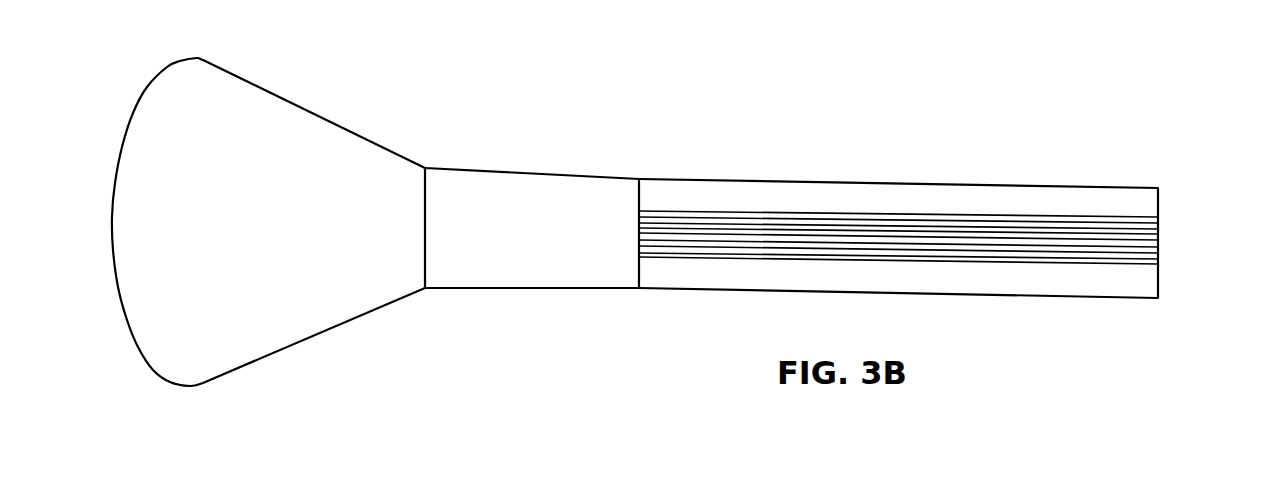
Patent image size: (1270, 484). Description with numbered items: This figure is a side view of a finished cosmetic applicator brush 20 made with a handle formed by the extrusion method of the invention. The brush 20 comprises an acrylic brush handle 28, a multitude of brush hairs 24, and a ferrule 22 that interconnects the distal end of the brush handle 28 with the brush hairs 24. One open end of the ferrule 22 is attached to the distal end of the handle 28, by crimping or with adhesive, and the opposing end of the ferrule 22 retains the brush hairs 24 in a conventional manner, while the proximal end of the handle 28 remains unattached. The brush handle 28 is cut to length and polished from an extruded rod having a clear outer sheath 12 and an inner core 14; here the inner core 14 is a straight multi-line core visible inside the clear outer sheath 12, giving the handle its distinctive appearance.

The cosmetic applicator brush 20 is at (682, 222).
The brush hairs 24 is at (310, 163).
The ferrule 22 is at (509, 195).
The clear outer sheath 12 is at (1082, 207).
The inner core 14 is at (1150, 243).
The brush handle 28 is at (952, 168).